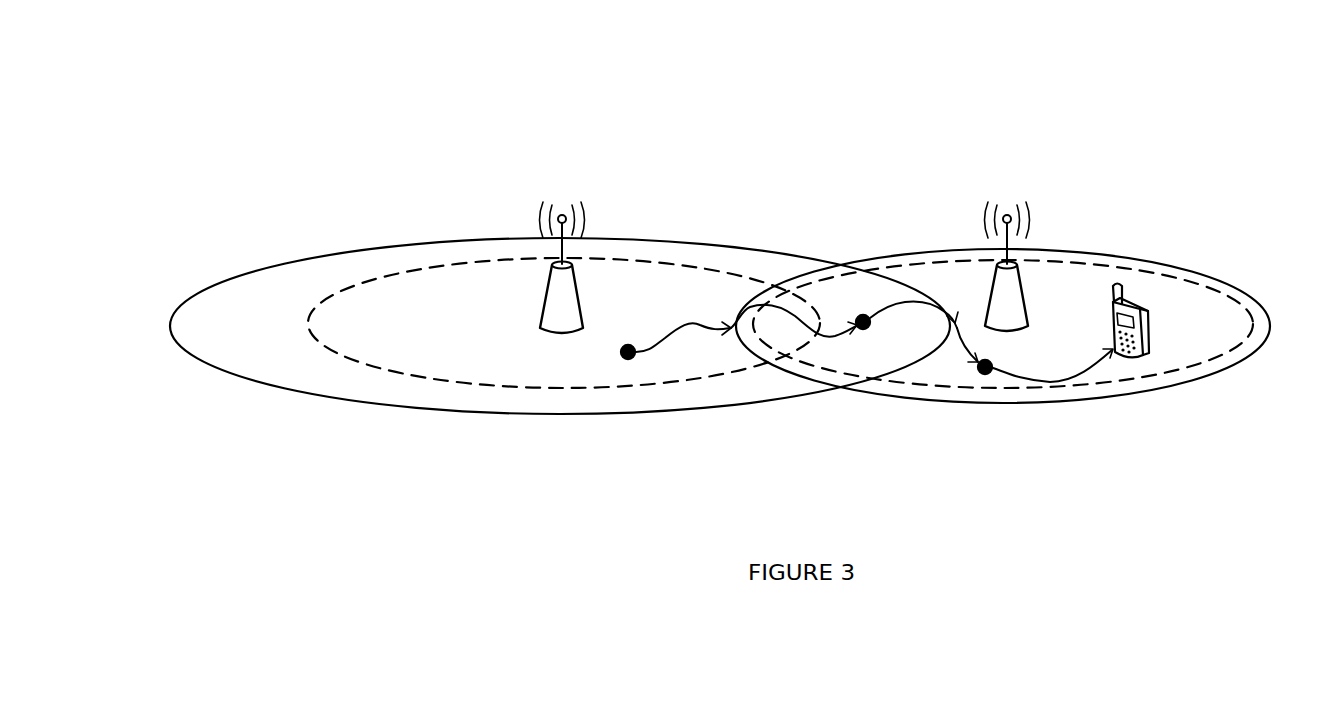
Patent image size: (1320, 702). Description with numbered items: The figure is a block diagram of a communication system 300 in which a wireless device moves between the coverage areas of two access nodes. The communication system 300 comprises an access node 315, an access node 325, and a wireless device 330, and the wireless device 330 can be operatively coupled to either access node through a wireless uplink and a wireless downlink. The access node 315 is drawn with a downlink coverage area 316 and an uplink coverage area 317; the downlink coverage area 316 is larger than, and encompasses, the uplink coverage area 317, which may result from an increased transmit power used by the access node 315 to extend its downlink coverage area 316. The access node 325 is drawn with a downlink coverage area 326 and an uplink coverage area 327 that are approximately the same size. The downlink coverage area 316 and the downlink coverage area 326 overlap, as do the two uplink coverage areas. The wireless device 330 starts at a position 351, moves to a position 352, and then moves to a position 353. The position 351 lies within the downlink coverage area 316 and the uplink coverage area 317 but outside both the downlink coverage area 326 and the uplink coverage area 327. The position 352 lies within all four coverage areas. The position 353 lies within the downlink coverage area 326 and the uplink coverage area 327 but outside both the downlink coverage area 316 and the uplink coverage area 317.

The communication system 300 is at (253, 74).
The access node 315 is at (545, 316).
The downlink coverage area 316 is at (325, 390).
The uplink coverage area 317 is at (310, 318).
The access node 325 is at (1016, 314).
The downlink coverage area 326 is at (1232, 368).
The uplink coverage area 327 is at (1147, 374).
The wireless device 330 is at (1141, 305).
The position 351 is at (628, 332).
The position 352 is at (861, 313).
The position 353 is at (981, 377).